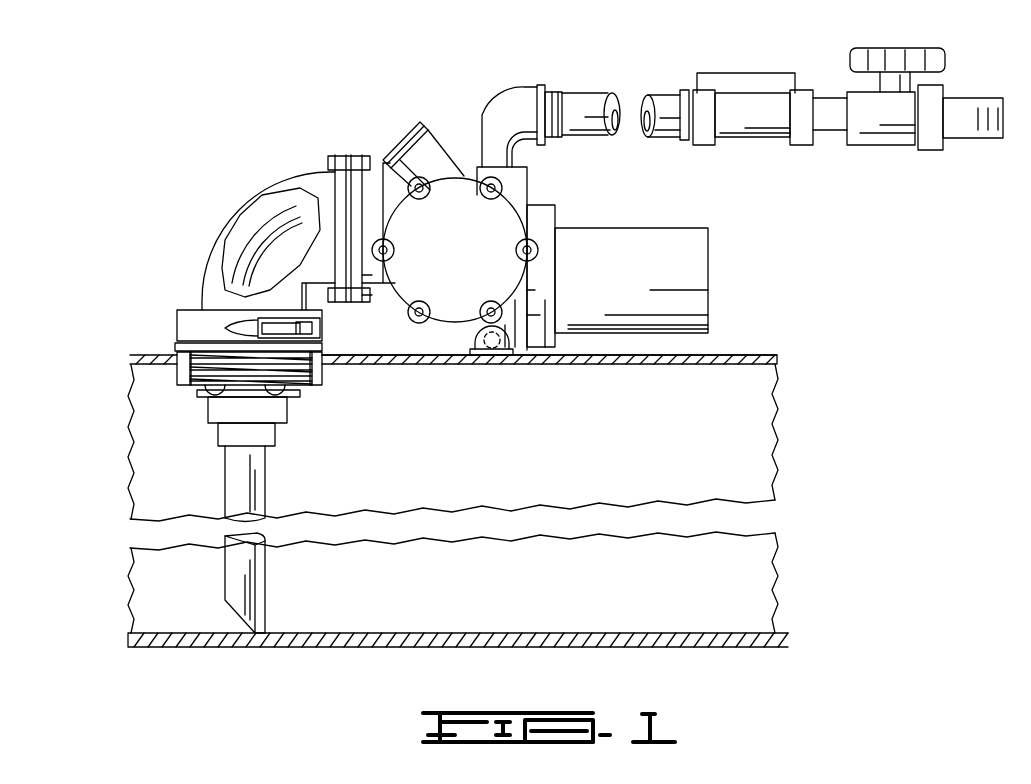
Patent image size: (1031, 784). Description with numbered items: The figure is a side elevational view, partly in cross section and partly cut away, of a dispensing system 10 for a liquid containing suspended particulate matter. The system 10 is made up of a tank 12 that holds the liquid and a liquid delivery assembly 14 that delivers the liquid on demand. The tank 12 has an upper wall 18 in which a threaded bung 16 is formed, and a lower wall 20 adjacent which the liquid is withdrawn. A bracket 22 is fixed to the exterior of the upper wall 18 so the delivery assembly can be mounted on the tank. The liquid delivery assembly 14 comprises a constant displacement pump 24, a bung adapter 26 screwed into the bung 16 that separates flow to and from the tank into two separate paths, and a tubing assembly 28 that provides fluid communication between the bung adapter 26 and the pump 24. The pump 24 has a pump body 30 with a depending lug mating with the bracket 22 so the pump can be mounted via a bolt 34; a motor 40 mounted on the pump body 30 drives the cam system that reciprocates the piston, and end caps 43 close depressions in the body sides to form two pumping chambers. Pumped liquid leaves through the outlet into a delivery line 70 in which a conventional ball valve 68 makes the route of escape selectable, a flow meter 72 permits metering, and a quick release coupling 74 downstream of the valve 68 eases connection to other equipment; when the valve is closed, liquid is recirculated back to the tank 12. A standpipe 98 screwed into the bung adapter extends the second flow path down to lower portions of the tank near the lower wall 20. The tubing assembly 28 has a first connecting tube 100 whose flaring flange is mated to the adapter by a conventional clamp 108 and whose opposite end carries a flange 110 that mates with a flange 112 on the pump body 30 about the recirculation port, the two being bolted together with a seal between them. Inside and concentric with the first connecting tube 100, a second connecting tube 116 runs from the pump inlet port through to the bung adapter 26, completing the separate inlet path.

The dispensing system 10 is at (505, 83).
The tank 12 is at (768, 352).
The liquid delivery assembly 14 is at (597, 90).
The threaded bung 16 is at (178, 345).
The upper wall 18 is at (715, 362).
The lower wall 20 is at (600, 630).
The bracket 22 is at (503, 348).
The constant displacement pump 24 is at (448, 140).
The bung adapter 26 is at (183, 370).
The tubing assembly 28 is at (268, 172).
The pump body 30 is at (430, 135).
The bolt 34 is at (492, 348).
The motor 40 is at (678, 243).
The end caps 43 is at (470, 260).
The ball valve 68 is at (890, 135).
The delivery line 70 is at (663, 105).
The flow meter 72 is at (750, 137).
The quick release coupling 74 is at (945, 143).
The standpipe 98 is at (248, 580).
The first connecting tube 100 is at (228, 212).
The clamp 108 is at (188, 317).
The flange 110 is at (336, 155).
The flange 112 is at (350, 155).
The second connecting tube 116 is at (263, 222).